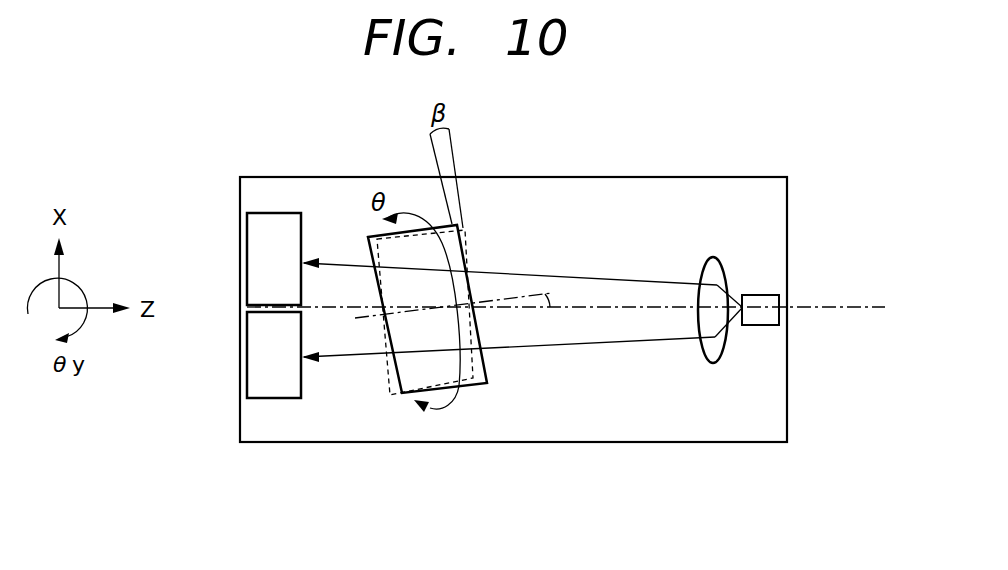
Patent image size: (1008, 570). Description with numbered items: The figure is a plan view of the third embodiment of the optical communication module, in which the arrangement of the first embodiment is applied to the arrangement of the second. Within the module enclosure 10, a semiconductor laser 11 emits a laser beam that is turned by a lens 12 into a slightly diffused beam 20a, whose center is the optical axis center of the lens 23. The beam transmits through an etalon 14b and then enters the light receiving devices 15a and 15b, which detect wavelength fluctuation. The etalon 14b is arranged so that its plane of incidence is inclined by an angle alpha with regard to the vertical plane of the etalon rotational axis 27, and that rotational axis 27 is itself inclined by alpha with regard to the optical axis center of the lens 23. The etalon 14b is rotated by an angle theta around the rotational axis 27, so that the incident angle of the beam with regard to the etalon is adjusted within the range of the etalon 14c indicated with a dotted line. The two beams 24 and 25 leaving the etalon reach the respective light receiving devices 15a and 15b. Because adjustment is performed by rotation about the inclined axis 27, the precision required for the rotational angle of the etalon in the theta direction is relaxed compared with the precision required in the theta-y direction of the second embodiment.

The housing 10 is at (280, 413).
The semiconductor laser 11 is at (763, 295).
The lens 12 is at (712, 258).
The etalon 14b is at (463, 391).
The etalon 14c is at (390, 397).
The light receiving device 15a is at (282, 213).
The light receiving device 15b is at (247, 372).
The beam 20a is at (685, 330).
The optical axis center of the lens 23 is at (580, 306).
The lower reflected beam 24 is at (340, 356).
The upper reflected beam 25 is at (333, 263).
The etalon rotational axis 27 is at (486, 300).